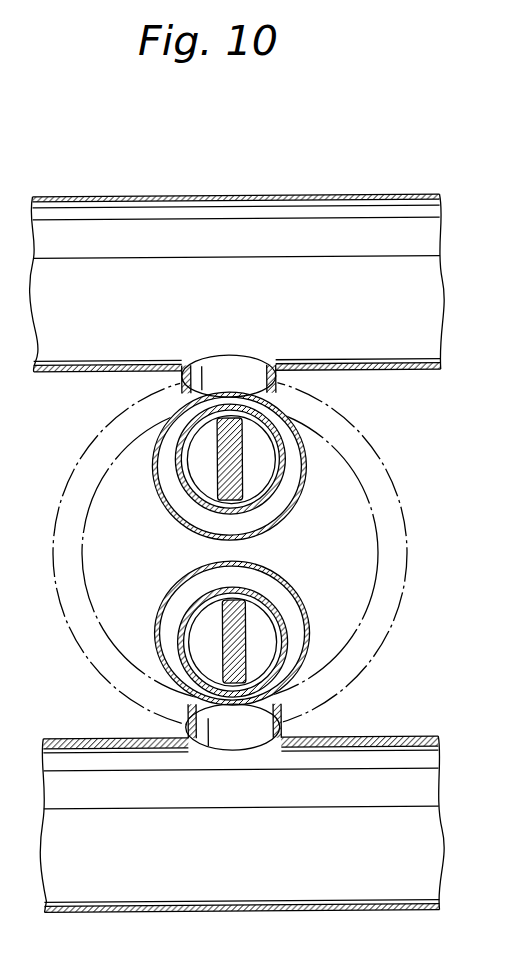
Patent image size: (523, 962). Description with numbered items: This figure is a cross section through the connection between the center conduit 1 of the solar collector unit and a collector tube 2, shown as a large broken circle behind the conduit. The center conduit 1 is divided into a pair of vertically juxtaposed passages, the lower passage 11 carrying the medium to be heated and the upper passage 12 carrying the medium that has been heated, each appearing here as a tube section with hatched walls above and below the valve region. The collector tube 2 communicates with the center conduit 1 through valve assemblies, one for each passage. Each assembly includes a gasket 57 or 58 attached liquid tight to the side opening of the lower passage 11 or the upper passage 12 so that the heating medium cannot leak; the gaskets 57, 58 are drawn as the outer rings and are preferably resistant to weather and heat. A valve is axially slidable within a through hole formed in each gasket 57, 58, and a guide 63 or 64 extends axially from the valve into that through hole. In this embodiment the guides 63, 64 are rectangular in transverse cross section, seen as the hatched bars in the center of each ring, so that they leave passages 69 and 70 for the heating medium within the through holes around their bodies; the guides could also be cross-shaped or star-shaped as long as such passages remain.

The center conduit 1 is at (127, 228).
The solar heat collector tube 2 is at (405, 505).
The lower passage 11 is at (165, 668).
The upper passage 12 is at (160, 440).
The gasket 57 is at (285, 681).
The gasket 58 is at (286, 504).
The guide 63 is at (250, 645).
The guide 64 is at (262, 455).
The passage for heating medium 69 is at (205, 634).
The passage for heating medium 70 is at (205, 467).